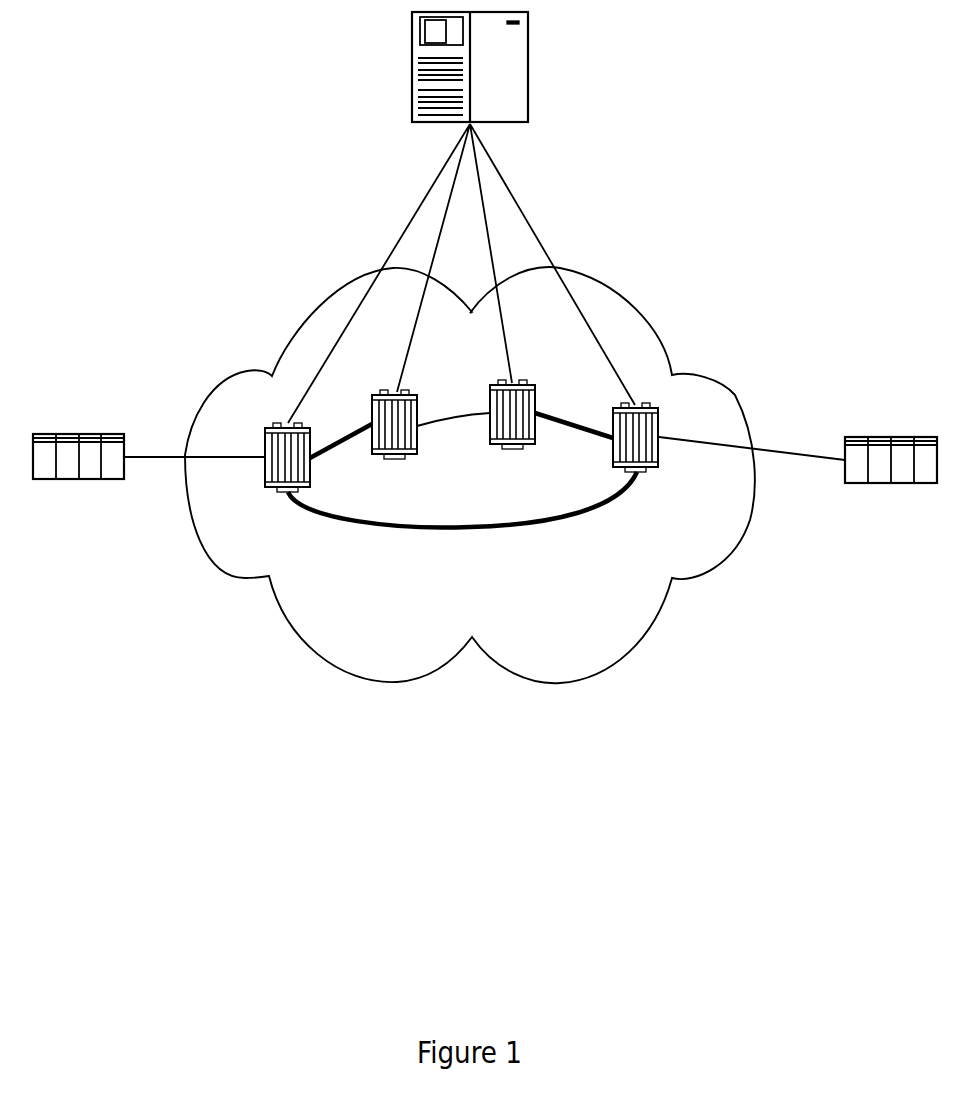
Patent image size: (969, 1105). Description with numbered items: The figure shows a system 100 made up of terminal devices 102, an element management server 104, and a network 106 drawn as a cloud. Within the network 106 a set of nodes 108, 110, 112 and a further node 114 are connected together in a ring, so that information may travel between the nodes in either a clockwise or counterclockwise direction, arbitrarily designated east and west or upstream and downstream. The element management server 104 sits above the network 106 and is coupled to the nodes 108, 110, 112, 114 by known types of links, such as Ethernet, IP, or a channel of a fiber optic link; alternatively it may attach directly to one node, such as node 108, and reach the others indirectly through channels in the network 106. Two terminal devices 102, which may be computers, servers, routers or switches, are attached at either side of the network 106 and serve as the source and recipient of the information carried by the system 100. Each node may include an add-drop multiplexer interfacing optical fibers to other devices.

The system 100 is at (485, 361).
The terminal devices 102 is at (485, 435).
The element management server 104 is at (508, 67).
The network 106 is at (470, 475).
The node 108 is at (270, 475).
The node 110 is at (410, 410).
The node 112 is at (525, 398).
The router 114 is at (654, 454).